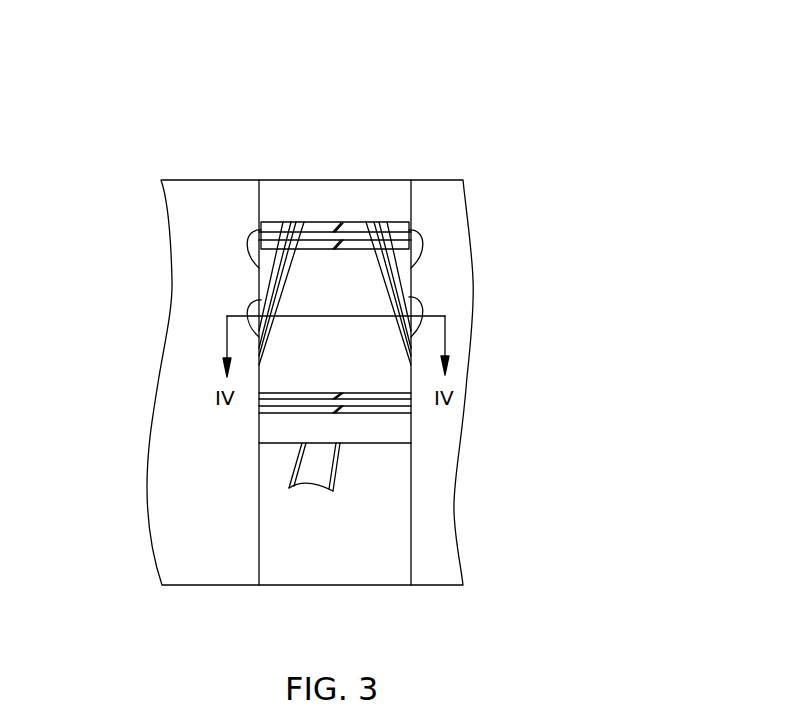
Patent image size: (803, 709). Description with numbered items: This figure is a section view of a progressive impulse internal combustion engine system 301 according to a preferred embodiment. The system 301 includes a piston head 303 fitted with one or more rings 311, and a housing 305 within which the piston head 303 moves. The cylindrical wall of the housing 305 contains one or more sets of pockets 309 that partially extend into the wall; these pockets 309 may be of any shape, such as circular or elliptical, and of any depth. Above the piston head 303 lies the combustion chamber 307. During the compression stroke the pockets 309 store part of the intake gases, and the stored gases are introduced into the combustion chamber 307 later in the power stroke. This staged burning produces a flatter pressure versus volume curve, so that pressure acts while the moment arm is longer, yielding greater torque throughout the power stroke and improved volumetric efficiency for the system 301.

The progressive impulse engine system 301 is at (542, 102).
The piston head 303 is at (383, 445).
The housing 305 is at (412, 498).
The combustion chamber 307 is at (397, 200).
The pockets 309 is at (252, 242).
The rings 311 is at (412, 232).